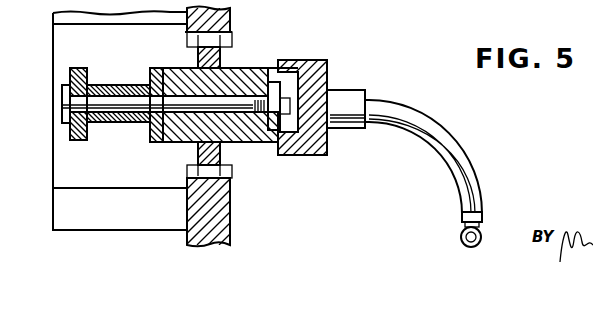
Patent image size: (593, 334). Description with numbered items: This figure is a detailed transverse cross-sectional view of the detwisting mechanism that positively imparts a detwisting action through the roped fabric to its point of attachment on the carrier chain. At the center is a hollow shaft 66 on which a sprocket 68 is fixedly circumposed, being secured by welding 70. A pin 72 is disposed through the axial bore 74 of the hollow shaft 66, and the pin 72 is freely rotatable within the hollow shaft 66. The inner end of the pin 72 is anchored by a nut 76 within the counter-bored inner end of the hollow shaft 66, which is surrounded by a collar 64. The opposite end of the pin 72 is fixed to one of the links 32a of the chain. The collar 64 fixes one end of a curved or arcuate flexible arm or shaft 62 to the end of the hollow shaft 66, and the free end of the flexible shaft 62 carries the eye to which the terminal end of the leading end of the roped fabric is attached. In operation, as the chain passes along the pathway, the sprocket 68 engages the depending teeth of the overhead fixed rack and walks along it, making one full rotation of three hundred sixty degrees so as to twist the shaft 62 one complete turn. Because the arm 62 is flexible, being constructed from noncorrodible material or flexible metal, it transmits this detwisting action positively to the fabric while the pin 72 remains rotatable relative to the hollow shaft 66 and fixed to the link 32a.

The link 32a is at (76, 146).
The flexible arm 62 is at (480, 190).
The collar 64 is at (323, 62).
The hollow shaft 66 is at (267, 145).
The sprocket 68 is at (223, 56).
The welding 70 is at (219, 152).
The pin 72 is at (164, 103).
The axial bore 74 is at (198, 104).
The nut 76 is at (283, 90).